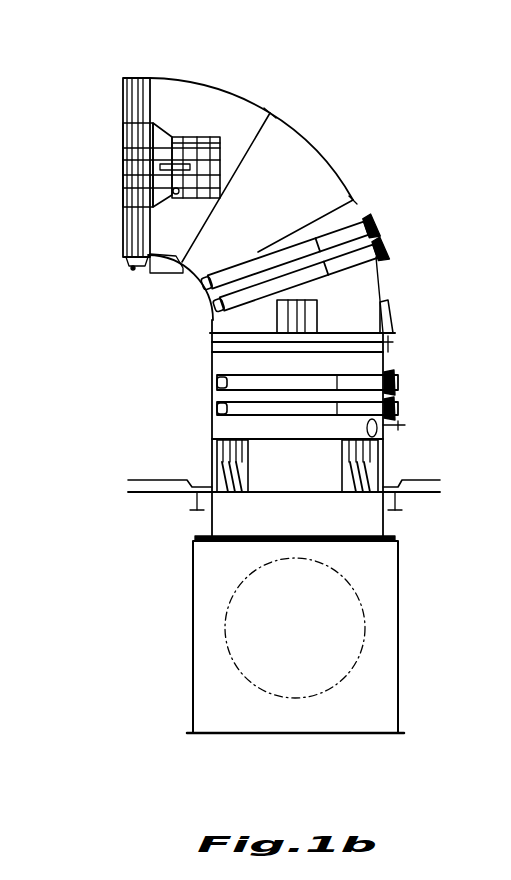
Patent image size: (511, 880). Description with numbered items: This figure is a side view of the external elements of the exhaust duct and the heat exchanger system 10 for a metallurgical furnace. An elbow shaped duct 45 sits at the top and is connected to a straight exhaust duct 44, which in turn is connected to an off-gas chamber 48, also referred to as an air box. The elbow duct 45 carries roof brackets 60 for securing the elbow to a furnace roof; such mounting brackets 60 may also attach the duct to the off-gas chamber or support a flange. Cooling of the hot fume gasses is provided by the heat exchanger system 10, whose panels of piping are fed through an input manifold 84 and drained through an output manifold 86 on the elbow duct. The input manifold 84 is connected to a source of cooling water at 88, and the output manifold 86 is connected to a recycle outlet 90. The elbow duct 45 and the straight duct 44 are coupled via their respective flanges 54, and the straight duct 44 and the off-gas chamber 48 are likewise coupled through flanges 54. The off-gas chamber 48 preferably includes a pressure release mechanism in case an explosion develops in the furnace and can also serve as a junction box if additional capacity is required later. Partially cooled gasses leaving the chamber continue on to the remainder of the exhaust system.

The heat exchanger system 10 is at (100, 238).
The elbow duct 45 is at (290, 98).
The roof brackets 60 is at (125, 160).
The input manifold 84 is at (204, 280).
The output manifold 86 is at (210, 298).
The source of cooling water 88 is at (385, 218).
The recycle outlet 90 is at (392, 247).
The flange 54 is at (212, 345).
The straight exhaust duct 44 is at (235, 432).
The off-gas chamber 48 is at (200, 712).